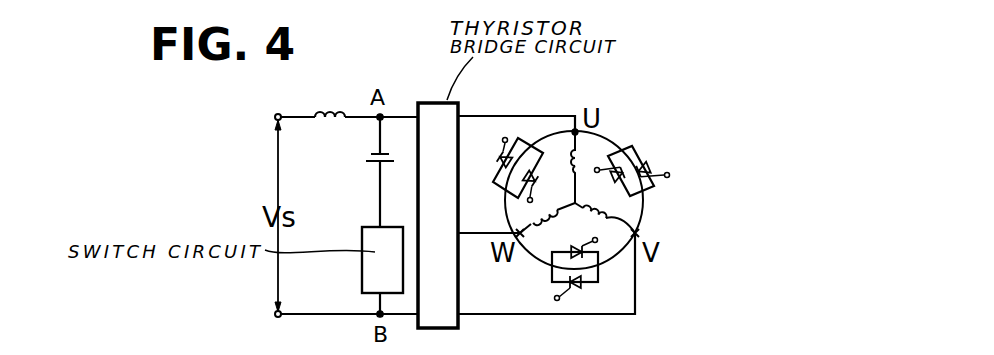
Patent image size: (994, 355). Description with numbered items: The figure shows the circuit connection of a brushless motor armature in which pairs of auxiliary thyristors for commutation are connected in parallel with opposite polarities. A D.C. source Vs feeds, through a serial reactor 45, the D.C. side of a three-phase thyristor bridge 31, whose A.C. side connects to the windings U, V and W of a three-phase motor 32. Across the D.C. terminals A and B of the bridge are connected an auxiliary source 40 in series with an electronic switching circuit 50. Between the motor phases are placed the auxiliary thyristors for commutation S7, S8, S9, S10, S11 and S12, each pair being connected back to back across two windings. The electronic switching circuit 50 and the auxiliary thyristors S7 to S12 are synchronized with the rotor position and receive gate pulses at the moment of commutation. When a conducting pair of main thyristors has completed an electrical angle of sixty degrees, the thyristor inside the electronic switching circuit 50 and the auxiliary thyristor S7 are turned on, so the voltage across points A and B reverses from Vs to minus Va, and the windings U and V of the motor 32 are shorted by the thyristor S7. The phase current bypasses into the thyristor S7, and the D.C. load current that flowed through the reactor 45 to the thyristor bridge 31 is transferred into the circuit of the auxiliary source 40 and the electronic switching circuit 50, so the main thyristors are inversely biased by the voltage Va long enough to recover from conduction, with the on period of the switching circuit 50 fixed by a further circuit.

The three-phase thyristor bridge 31 is at (435, 102).
The three-phase motor 32 is at (574, 112).
The auxiliary source 40 is at (391, 146).
The reactor 45 is at (328, 112).
The electronic switching circuit 50 is at (390, 226).
The auxiliary thyristor for commutation S7 is at (614, 186).
The auxiliary thyristor for commutation S8 is at (502, 141).
The auxiliary thyristor for commutation S9 is at (578, 246).
The auxiliary thyristor for commutation S10 is at (650, 162).
The auxiliary thyristor for commutation S11 is at (555, 183).
The auxiliary thyristor for commutation S12 is at (582, 283).